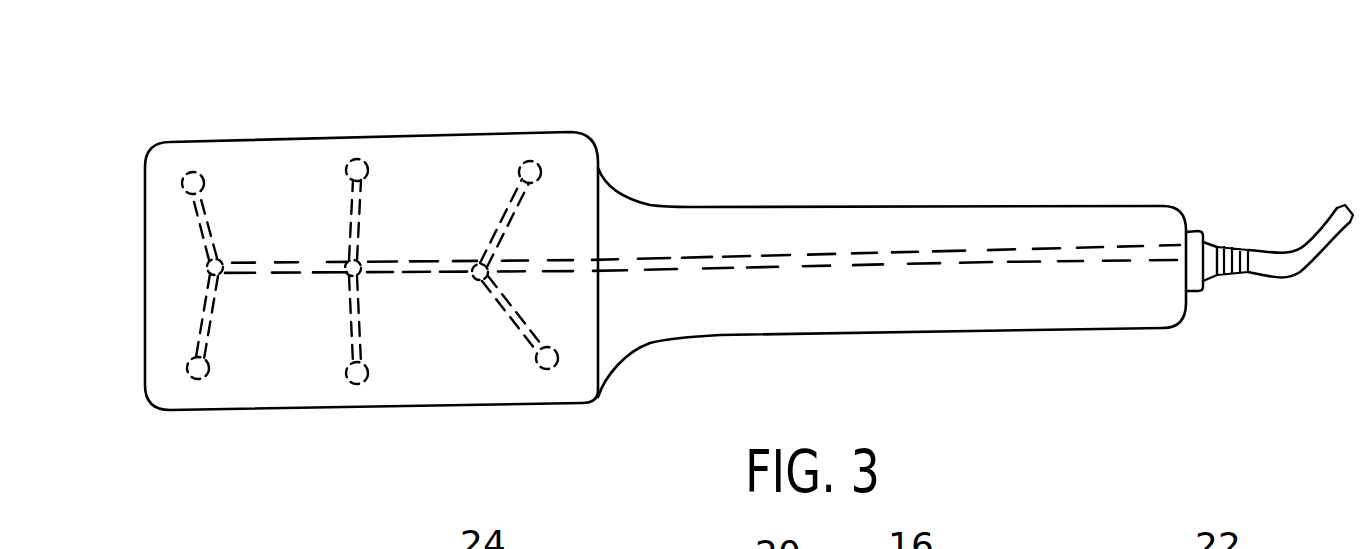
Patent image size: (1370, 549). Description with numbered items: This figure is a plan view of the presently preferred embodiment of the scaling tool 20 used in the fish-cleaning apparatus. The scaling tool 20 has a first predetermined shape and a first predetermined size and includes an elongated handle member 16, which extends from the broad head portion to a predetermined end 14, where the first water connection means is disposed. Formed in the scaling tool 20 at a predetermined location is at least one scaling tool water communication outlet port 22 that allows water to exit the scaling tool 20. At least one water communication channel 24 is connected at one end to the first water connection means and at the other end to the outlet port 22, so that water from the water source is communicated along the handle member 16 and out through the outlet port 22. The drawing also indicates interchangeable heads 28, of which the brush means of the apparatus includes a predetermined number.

The predetermined end 14 is at (1187, 315).
The handle member 16 is at (780, 235).
The scaling tool 20 is at (653, 112).
The scaling tool water communication outlet port 22 is at (1236, 246).
The water communication channel 24 is at (348, 212).
The interchangeable heads 28 is at (447, 162).